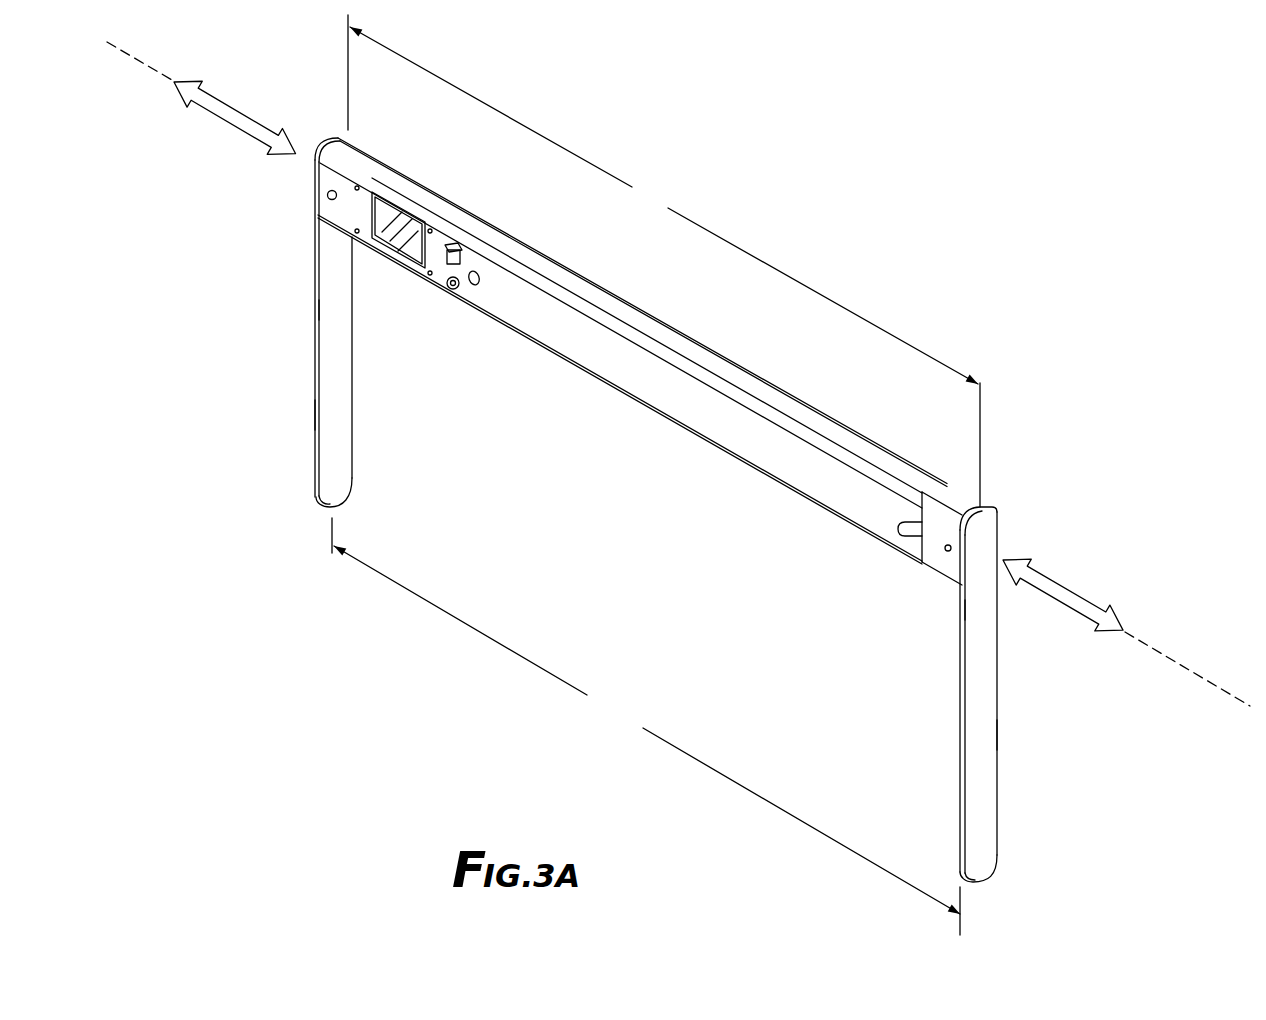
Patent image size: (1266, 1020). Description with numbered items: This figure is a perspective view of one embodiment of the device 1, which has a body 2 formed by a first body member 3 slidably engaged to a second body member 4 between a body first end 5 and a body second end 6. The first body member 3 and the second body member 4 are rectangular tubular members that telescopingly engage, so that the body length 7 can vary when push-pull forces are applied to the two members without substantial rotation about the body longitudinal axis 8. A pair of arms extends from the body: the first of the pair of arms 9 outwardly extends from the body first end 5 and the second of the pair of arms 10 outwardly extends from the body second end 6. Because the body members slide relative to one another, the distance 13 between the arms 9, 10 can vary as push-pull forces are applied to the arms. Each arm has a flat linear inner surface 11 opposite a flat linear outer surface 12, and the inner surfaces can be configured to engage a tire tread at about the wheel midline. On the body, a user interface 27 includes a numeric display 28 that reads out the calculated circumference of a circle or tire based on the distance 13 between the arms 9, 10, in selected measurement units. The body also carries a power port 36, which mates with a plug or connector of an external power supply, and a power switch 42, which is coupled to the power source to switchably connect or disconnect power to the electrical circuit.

The device 1 is at (1133, 194).
The body 2 is at (730, 343).
The first body member 3 is at (495, 226).
The second body member 4 is at (958, 485).
The body first end 5 is at (368, 165).
The body second end 6 is at (993, 518).
The body length 7 is at (664, 261).
The body longitudinal axis 8 is at (129, 57).
The first of the pair of arms 9 is at (305, 270).
The second of the pair of arms 10 is at (998, 679).
The inner surface 11 is at (338, 408).
The outer surface 12 is at (314, 415).
The distance 13 is at (646, 726).
The user interface 27 is at (410, 200).
The numeric display 28 is at (392, 238).
The power port 36 is at (454, 290).
The power switch 42 is at (463, 252).